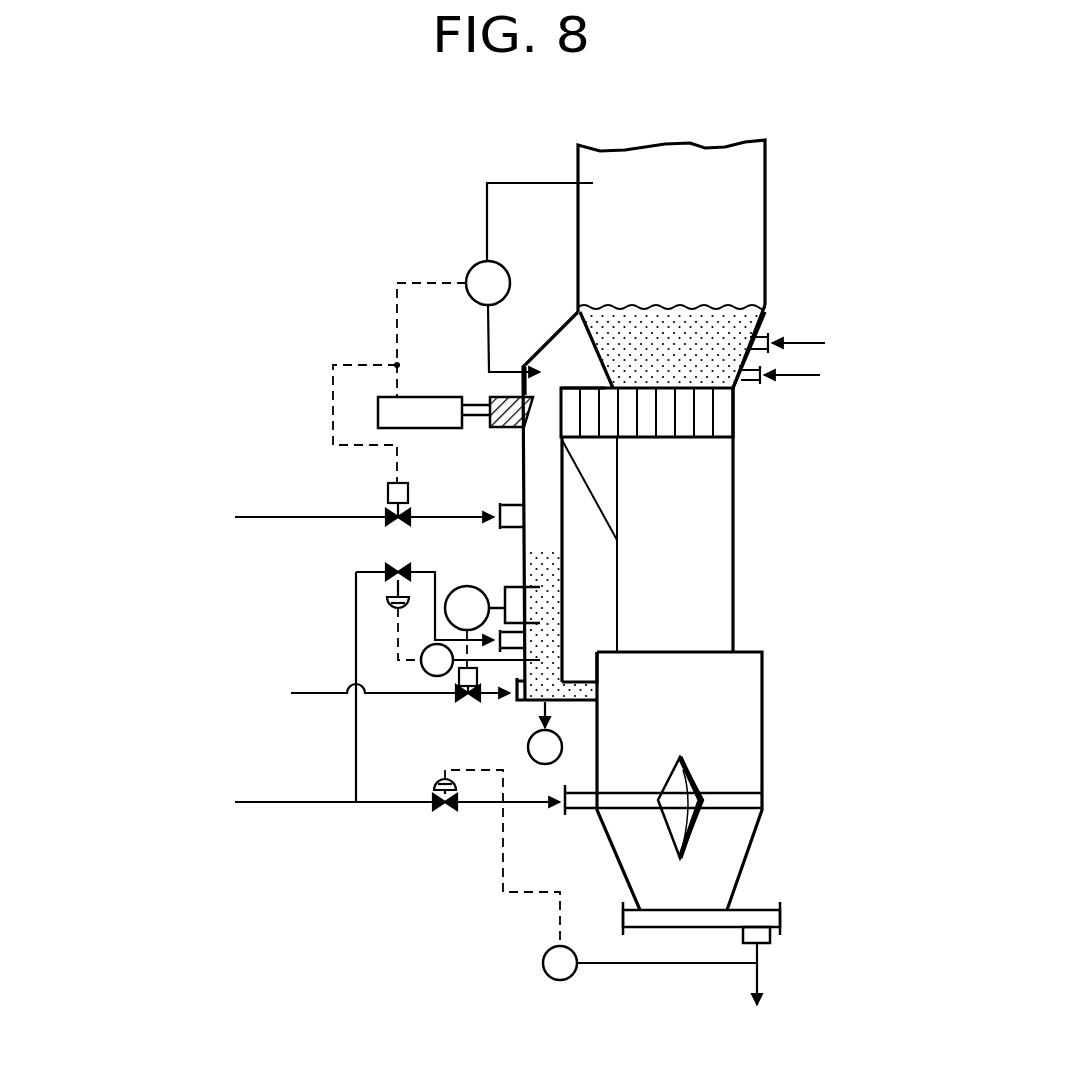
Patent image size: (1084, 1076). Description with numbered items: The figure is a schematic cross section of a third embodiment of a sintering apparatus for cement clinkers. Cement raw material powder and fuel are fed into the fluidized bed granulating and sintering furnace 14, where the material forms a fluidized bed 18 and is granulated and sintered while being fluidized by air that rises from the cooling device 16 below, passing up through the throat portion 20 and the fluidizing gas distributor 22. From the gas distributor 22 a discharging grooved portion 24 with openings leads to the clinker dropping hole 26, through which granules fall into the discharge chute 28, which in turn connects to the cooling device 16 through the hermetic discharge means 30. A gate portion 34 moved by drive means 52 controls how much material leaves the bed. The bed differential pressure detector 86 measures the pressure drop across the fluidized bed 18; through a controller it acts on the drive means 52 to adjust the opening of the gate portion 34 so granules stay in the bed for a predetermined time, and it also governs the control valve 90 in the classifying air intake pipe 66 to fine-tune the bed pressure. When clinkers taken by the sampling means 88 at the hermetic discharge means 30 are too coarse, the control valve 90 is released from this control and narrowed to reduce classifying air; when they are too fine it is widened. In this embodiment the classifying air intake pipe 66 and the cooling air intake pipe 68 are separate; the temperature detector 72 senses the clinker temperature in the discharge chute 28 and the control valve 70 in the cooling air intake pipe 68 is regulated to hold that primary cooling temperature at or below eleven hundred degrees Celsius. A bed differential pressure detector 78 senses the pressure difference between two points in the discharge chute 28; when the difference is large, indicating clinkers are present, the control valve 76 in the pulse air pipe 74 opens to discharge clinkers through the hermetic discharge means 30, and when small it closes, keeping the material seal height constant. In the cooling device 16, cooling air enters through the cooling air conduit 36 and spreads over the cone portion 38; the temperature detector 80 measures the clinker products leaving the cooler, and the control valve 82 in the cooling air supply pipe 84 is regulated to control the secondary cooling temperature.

The fluidized bed granulating and sintering furnace 14 is at (766, 203).
The cooling device 16 is at (763, 715).
The fluidized bed 18 is at (742, 325).
The throat portion 20 is at (728, 556).
The fluidizing gas distributor 22 is at (700, 438).
The discharging grooved portion 24 is at (580, 387).
The clinker dropping hole 26 is at (525, 385).
The discharge chute 28 is at (565, 612).
The hermetic discharge means 30 is at (523, 702).
The gate portion 34 is at (510, 428).
The cooling air conduit 36 is at (718, 810).
The cone portion 38 is at (690, 770).
The drive means 52 is at (378, 410).
The classifying air intake pipe 66 is at (447, 516).
The cooling air intake pipe 68 is at (435, 571).
The control valve 70 is at (386, 573).
The temperature detector 72 is at (421, 668).
The pulse air pipe 74 is at (390, 695).
The control valve 76 is at (468, 702).
The bed differential pressure detector 78 is at (470, 586).
The temperature detector 80 is at (543, 964).
The control valve 82 is at (440, 812).
The cooling air supply pipe 84 is at (379, 804).
The bed differential pressure detector 86 is at (478, 264).
The sampling means 88 is at (562, 745).
The control valve 90 is at (390, 512).